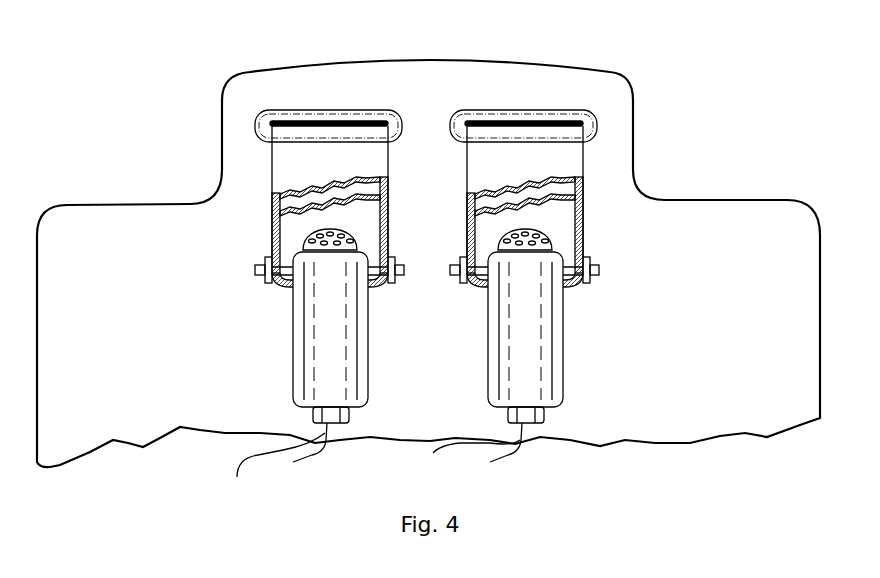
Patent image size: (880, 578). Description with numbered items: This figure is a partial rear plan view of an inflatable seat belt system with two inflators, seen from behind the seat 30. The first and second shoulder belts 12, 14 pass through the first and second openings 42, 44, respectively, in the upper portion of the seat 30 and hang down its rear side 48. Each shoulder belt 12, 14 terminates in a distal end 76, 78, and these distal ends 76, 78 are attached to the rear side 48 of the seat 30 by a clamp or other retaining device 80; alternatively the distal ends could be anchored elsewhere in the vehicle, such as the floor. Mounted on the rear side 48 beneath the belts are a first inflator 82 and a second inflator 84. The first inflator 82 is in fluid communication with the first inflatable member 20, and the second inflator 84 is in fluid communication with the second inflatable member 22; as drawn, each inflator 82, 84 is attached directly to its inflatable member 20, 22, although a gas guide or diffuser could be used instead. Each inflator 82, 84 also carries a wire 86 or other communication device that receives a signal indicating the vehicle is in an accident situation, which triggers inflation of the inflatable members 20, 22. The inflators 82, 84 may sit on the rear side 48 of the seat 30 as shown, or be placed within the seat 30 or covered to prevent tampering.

The first shoulder belt 12 is at (557, 193).
The second shoulder belt 14 is at (295, 194).
The first inflatable member 20 is at (488, 232).
The second inflatable member 22 is at (387, 208).
The seat 30 is at (743, 213).
The first opening 42 is at (548, 118).
The second opening 44 is at (318, 118).
The rear side of the seat 48 is at (100, 257).
The distal end of first shoulder belt 76 is at (577, 287).
The distal end of second shoulder belt 78 is at (280, 293).
The clamp or retaining device 80 is at (260, 262).
The first inflator 82 is at (518, 355).
The second inflator 84 is at (343, 335).
The wire 86 is at (267, 460).